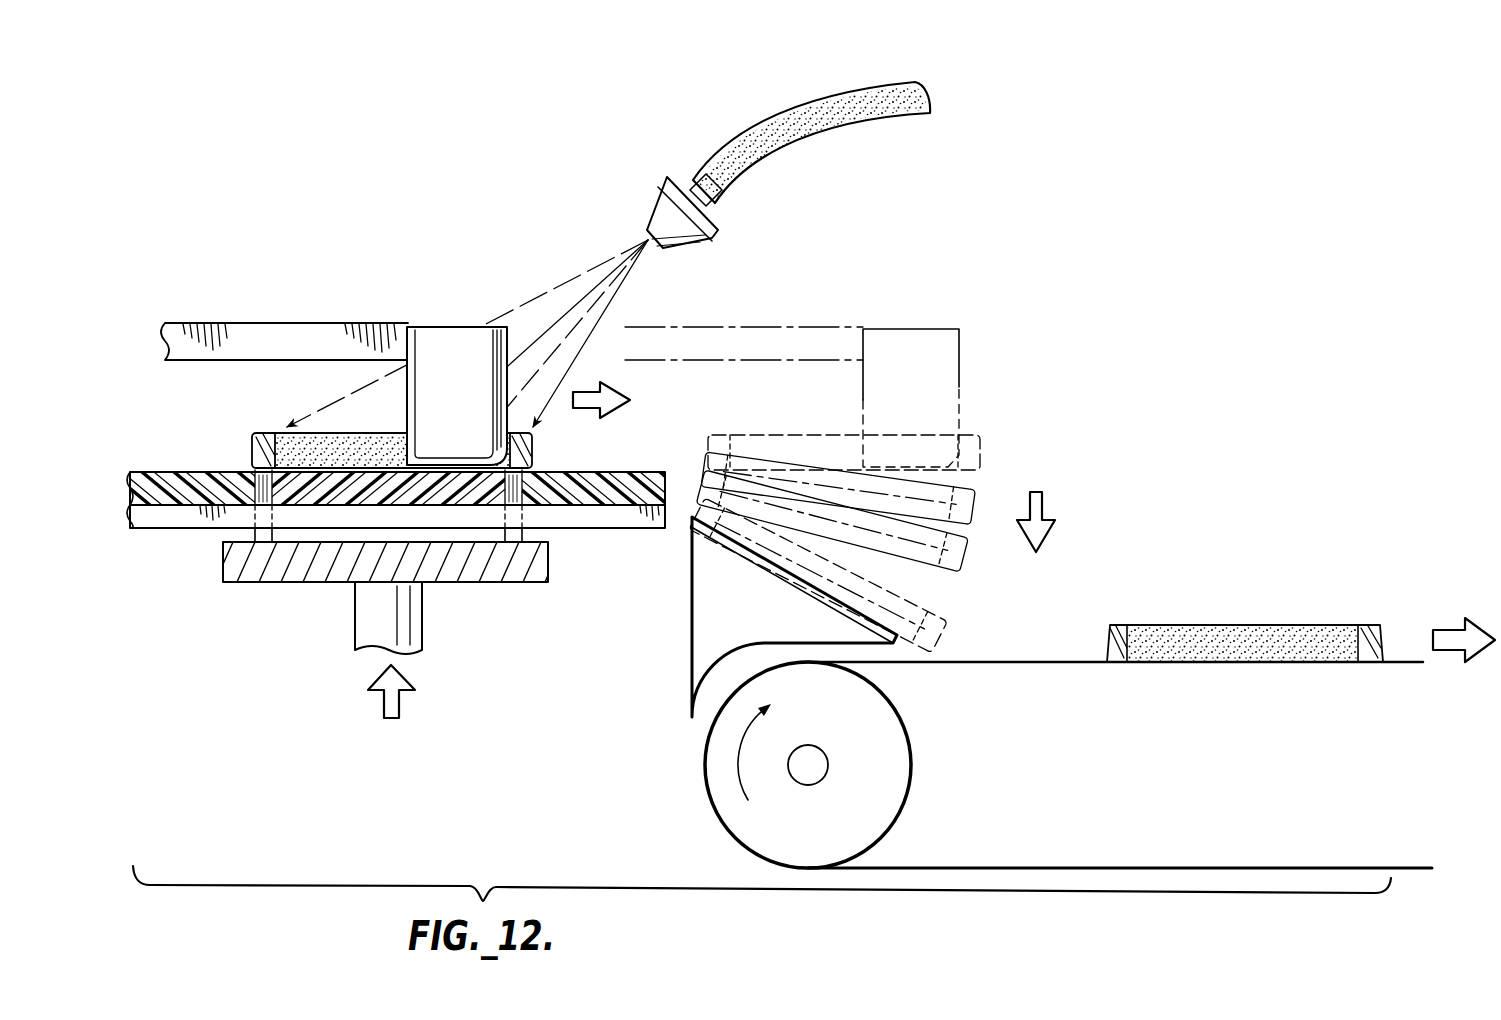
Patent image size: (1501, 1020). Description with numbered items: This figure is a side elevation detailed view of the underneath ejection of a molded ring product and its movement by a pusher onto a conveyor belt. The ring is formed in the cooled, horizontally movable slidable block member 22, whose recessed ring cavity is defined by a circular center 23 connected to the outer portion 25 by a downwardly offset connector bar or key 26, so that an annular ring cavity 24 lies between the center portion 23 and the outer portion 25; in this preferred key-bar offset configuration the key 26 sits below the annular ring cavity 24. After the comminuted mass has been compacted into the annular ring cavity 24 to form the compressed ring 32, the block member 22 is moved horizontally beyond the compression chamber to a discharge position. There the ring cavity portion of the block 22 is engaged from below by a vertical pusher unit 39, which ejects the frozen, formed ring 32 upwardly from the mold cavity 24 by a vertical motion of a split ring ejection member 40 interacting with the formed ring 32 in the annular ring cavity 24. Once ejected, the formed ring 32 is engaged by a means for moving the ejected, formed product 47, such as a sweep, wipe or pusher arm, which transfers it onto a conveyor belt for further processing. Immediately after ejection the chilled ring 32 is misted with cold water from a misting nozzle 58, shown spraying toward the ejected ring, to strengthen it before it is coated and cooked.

The slidable block member 22 is at (165, 520).
The circular center 23 is at (386, 482).
The annular ring cavity 24 is at (548, 490).
The outer portion 25 is at (653, 477).
The connector bar or key 26 is at (200, 528).
The compressed ring 32 is at (515, 456).
The pusher unit 39 is at (462, 582).
The split ring ejection member 40 is at (525, 530).
The means for moving the ejected, formed product 47 is at (446, 335).
The spray nozzle 58 is at (652, 213).